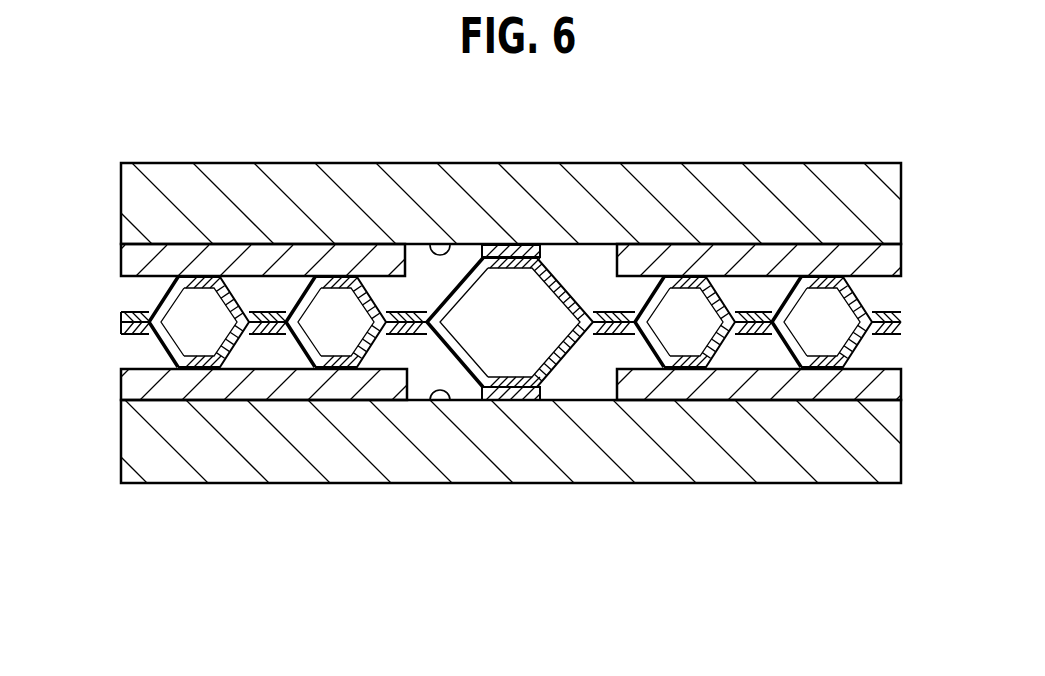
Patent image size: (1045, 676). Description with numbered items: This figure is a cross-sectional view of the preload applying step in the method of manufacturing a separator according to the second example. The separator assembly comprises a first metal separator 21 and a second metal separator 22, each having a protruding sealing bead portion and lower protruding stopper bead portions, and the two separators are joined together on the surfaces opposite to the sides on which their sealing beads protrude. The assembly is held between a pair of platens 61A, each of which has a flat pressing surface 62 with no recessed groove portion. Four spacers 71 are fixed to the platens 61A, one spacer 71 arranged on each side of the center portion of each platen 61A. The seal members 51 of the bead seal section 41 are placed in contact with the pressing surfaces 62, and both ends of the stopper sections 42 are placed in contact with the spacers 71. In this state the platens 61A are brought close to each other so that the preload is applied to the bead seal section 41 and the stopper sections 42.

The first metal separator 21 is at (140, 298).
The second metal separator 22 is at (140, 347).
The bead seal section 41 is at (568, 275).
The stopper sections 42 is at (234, 291).
The seal members 51 is at (531, 250).
The pressing surface 62 is at (449, 250).
The spacers 71 is at (306, 253).
The platens 61A is at (825, 120).